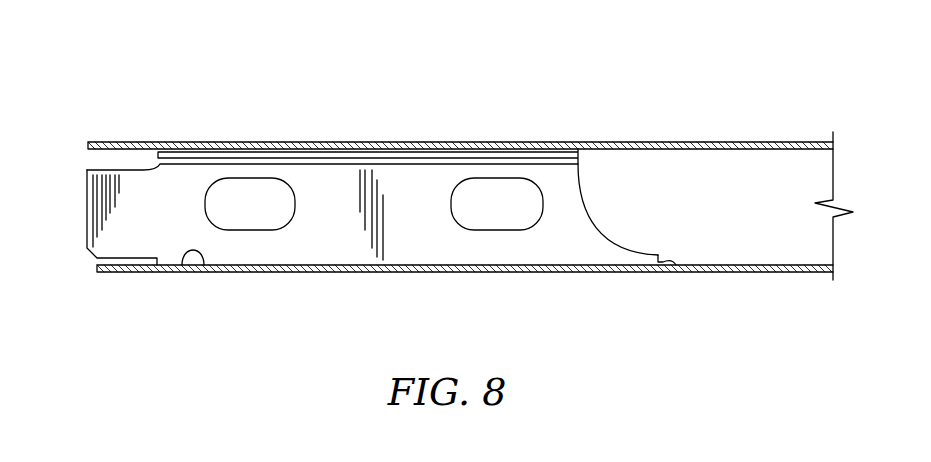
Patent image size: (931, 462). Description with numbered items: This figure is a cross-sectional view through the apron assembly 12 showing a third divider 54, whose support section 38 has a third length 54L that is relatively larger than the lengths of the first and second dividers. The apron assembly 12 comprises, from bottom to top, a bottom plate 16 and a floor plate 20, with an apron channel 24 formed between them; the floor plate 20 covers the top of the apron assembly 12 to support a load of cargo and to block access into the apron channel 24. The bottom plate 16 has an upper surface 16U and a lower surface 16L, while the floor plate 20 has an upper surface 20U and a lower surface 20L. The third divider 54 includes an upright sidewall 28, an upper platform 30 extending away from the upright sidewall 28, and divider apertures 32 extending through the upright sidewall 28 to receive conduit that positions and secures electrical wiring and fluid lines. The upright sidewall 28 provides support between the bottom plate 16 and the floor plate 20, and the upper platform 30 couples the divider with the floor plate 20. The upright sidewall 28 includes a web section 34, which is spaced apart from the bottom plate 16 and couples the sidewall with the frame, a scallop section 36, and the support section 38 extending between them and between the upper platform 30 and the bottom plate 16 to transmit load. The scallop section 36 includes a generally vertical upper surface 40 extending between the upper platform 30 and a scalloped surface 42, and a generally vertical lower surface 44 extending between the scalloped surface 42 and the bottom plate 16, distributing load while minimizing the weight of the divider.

The apron assembly 12 is at (177, 80).
The bottom plate 16 is at (300, 292).
The upper surface of the bottom plate 16U is at (183, 272).
The lower surface of the bottom plate 16L is at (128, 273).
The floor plate 20 is at (668, 128).
The upper surface of the floor plate 20U is at (753, 142).
The lower surface of the floor plate 20L is at (716, 149).
The apron channel 24 is at (788, 243).
The upright sidewall 28 is at (87, 180).
The upper platform 30 is at (195, 165).
The divider aperture 32 is at (247, 208).
The web section 34 is at (112, 237).
The scallop section 36 is at (597, 253).
The support section 38 is at (355, 215).
The upper surface of the scallop section 40 is at (578, 157).
The scalloped surface 42 is at (598, 222).
The lower surface of the scallop section 44 is at (676, 265).
The third divider 54 is at (402, 242).
The third length 54L is at (159, 112).